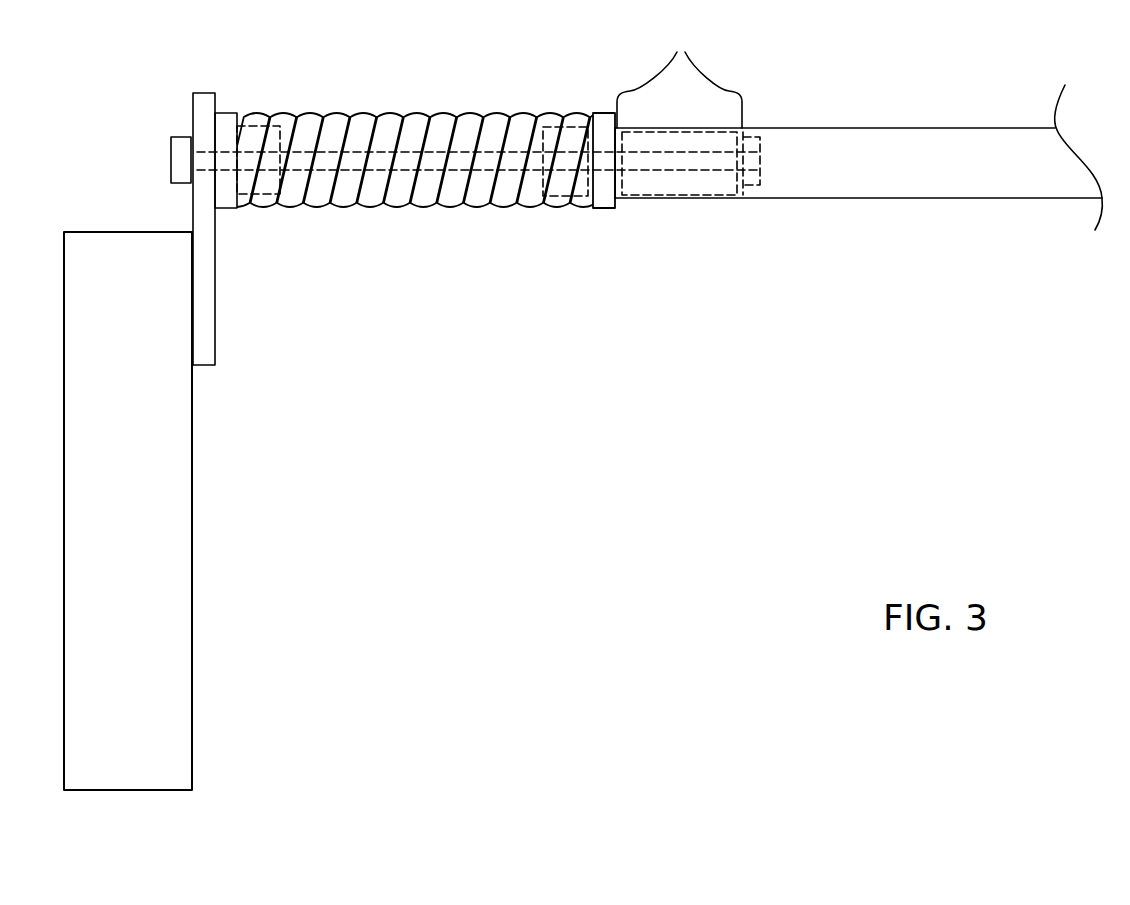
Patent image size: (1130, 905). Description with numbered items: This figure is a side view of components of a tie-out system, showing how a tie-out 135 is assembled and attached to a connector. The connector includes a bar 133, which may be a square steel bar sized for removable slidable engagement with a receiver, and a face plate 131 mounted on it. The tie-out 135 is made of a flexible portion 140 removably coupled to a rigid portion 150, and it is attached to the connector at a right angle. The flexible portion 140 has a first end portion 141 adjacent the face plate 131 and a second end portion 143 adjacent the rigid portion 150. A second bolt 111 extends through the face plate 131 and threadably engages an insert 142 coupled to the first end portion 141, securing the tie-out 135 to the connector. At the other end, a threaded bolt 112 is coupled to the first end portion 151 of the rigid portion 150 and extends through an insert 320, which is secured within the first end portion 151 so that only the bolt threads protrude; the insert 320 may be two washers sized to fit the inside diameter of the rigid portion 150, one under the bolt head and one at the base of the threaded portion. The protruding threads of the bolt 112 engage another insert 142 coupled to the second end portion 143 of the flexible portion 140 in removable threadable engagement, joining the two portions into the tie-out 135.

The second bolt 111 is at (173, 158).
The threaded bolt 112 is at (755, 165).
The face plate 131 is at (207, 345).
The bar 133 is at (185, 460).
The tie-out 135 is at (682, 424).
The flexible portion 140 is at (412, 114).
The first end portion 141 is at (266, 228).
The flexible portion insert 142 is at (256, 126).
The second end portion 143 is at (568, 236).
The rigid portion 150 is at (903, 193).
The first end portion 151 is at (645, 236).
The insert 320 is at (679, 110).